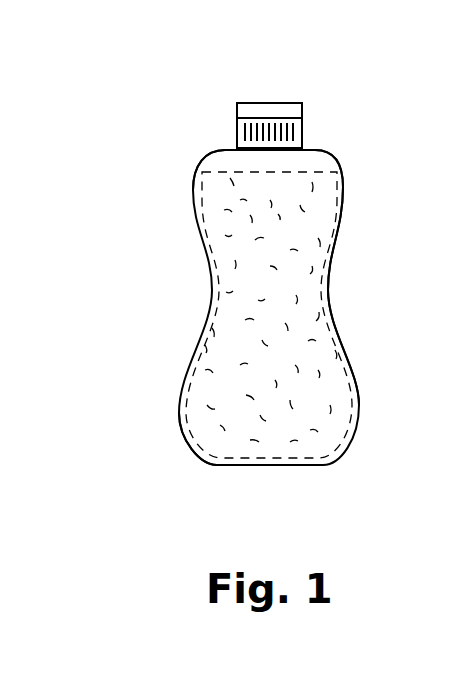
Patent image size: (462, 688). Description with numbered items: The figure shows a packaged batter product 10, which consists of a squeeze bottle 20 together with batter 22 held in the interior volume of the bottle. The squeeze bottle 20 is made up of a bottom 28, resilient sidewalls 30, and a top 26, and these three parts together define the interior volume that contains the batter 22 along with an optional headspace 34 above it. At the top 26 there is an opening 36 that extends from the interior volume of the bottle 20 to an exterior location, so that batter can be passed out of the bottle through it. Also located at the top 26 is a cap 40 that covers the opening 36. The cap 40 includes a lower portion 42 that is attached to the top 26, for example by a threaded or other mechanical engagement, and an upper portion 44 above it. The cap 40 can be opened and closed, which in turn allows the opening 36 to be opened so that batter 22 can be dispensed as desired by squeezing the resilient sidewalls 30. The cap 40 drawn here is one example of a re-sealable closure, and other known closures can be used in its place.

The packaged batter product 10 is at (389, 428).
The squeeze bottle 20 is at (192, 447).
The batter 22 is at (257, 372).
The top 26 is at (349, 161).
The bottom 28 is at (262, 465).
The resilient sidewalls 30 is at (335, 325).
The headspace 34 is at (235, 165).
The opening 36 is at (266, 158).
The cap 40 is at (227, 109).
The lower portion 42 is at (302, 135).
The upper portion 44 is at (273, 103).